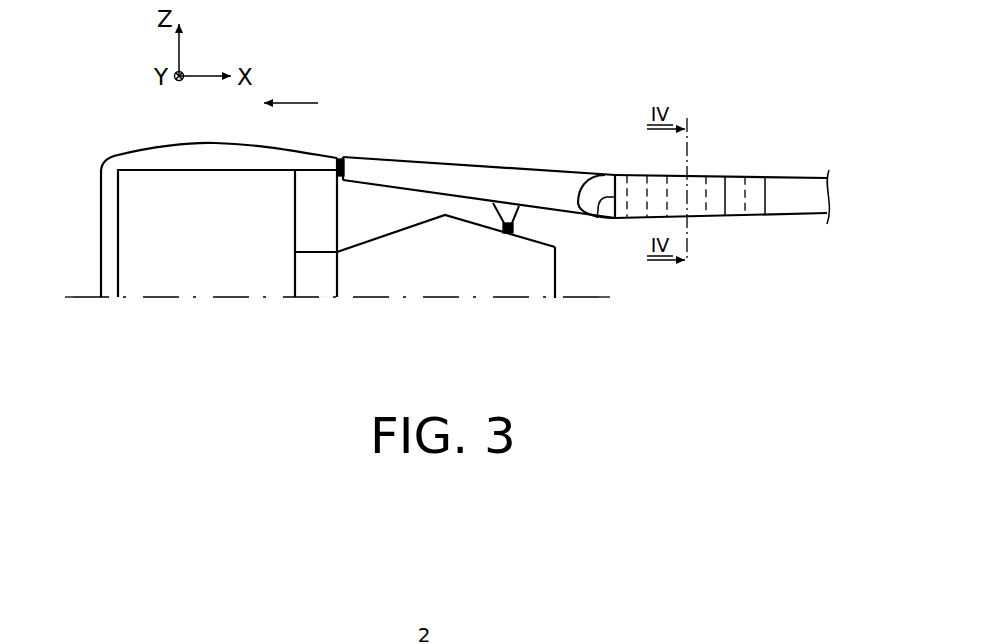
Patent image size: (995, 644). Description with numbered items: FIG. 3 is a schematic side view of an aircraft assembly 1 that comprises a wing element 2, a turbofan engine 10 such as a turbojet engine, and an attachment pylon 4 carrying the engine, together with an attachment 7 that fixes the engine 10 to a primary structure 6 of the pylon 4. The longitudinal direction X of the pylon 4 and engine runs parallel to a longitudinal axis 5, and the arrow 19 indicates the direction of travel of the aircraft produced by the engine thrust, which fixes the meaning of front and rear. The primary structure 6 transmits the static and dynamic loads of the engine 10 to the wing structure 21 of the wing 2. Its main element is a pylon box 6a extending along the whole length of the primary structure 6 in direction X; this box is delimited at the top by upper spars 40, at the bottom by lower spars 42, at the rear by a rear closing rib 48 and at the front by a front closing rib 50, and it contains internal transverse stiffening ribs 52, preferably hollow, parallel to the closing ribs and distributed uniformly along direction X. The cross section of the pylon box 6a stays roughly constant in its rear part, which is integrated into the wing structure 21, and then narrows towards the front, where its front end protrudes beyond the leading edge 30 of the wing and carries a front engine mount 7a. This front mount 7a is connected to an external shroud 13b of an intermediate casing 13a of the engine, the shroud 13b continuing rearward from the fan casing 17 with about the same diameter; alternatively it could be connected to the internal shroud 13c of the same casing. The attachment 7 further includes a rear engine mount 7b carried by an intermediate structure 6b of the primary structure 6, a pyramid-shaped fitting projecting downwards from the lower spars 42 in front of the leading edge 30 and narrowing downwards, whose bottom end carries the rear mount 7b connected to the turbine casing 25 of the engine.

The assembly 1 is at (595, 60).
The wing element 2 is at (747, 131).
The attachment pylon 4 is at (477, 160).
The longitudinal axis 5 is at (77, 299).
The primary structure 6 is at (523, 160).
The pylon box 6a is at (720, 208).
The intermediate structure 6b is at (518, 213).
The attachment 7 is at (482, 356).
The front engine mount 7a is at (346, 168).
The rear engine mount 7b is at (508, 233).
The turbofan engine 10 is at (128, 251).
The intermediate casing 13a is at (323, 298).
The external shroud 13b is at (322, 158).
The internal shroud 13c is at (310, 253).
The fan casing 17 is at (187, 168).
The arrow 19 is at (290, 103).
The wing structure 21 is at (767, 168).
The turbine casing 25 is at (522, 283).
The leading edge 30 is at (587, 190).
The upper spars 40 is at (698, 177).
The lower spars 42 is at (630, 220).
The rear closing rib 48 is at (768, 193).
The front closing rib 50 is at (607, 199).
The internal transverse stiffening ribs 52 is at (728, 200).